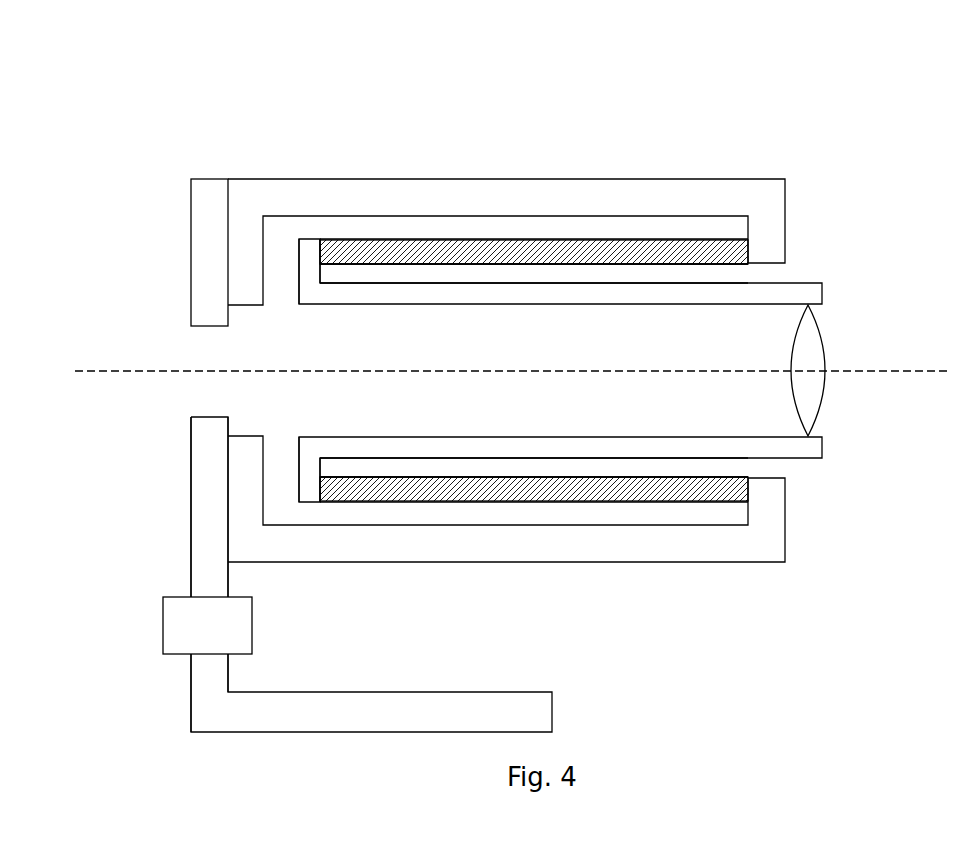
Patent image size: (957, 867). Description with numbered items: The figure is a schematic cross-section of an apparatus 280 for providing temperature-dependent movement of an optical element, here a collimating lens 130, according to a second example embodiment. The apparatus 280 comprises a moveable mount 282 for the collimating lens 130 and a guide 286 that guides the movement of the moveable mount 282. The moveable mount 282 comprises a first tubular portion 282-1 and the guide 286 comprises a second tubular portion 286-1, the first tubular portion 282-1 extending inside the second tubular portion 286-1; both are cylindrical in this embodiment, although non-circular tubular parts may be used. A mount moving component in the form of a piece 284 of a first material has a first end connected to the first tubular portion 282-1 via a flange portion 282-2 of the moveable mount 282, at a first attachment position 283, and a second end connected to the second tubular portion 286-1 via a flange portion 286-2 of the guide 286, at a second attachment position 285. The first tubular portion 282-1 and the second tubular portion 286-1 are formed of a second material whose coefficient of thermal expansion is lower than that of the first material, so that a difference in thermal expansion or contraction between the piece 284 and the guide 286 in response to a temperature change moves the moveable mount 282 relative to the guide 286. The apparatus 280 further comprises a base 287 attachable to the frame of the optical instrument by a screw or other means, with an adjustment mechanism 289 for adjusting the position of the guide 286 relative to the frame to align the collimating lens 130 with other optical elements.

The apparatus 280 is at (331, 98).
The moveable mount 282 is at (507, 311).
The first tubular portion 282-1 is at (412, 298).
The flange portion 282-2 is at (313, 252).
The first attachment position 283 is at (321, 240).
The piece of a first material 284 is at (618, 253).
The second attachment position 285 is at (747, 263).
The guide 286 is at (877, 140).
The second tubular portion 286-1 is at (695, 202).
The flange portion 286-2 is at (767, 222).
The base 287 is at (192, 548).
The adjustment mechanism 289 is at (166, 630).
The collimating lens 130 is at (824, 377).